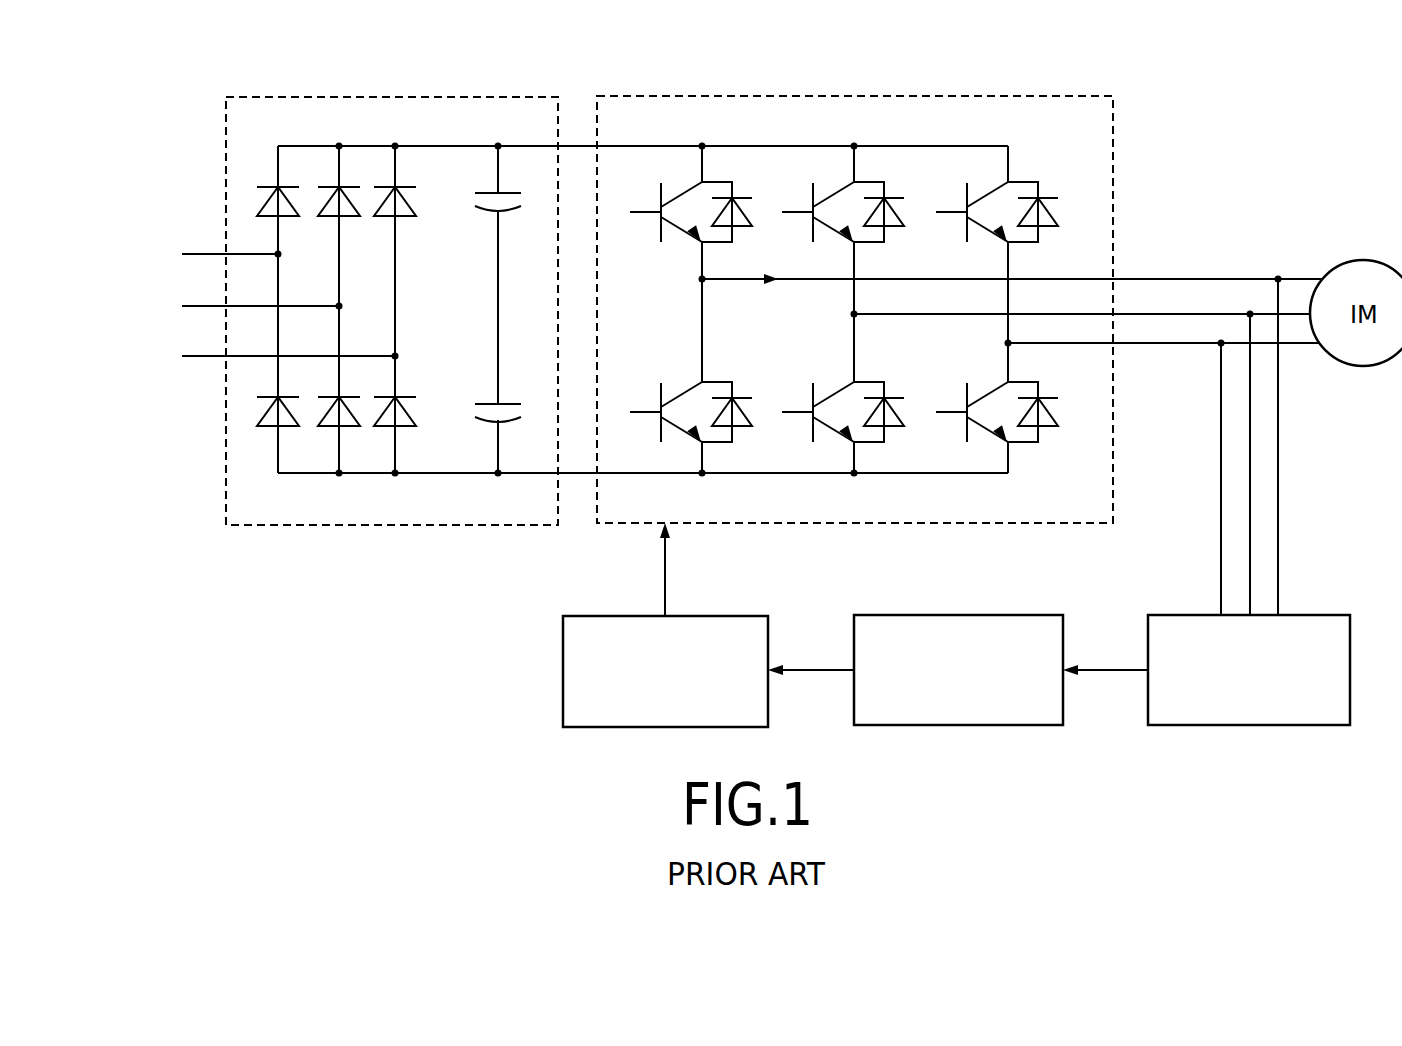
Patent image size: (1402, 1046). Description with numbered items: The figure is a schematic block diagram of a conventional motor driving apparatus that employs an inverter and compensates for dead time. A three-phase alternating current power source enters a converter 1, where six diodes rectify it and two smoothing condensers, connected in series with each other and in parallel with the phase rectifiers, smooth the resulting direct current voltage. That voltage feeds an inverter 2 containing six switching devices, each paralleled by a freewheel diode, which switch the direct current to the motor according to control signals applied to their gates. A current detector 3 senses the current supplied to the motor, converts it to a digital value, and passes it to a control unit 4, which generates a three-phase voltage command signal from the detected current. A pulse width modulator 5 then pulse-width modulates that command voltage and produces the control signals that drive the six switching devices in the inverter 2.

The converter 1 is at (432, 98).
The inverter 2 is at (918, 98).
The current detector 3 is at (1320, 615).
The control unit 4 is at (980, 615).
The pulse width modulator 5 is at (563, 668).